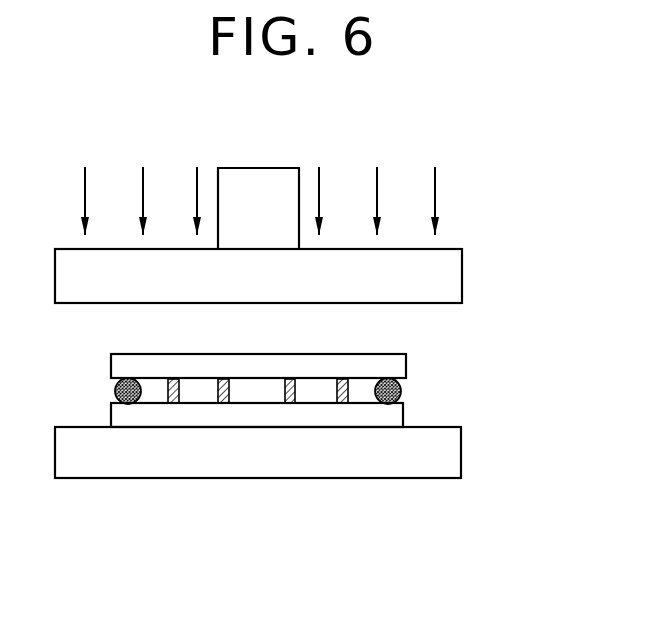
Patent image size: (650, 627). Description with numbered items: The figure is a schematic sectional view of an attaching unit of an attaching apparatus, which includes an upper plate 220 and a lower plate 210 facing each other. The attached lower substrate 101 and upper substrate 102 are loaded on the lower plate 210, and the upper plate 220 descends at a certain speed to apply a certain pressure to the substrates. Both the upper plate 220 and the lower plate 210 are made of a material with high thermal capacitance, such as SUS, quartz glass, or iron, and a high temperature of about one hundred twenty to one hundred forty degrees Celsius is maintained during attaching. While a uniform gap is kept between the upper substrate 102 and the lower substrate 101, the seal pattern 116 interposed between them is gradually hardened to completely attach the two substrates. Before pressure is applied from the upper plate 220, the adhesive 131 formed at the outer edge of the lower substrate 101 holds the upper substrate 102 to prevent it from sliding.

The upper plate 220 is at (446, 276).
The upper substrate 102 is at (406, 358).
The lower substrate 101 is at (403, 412).
The lower plate 210 is at (446, 458).
The seal pattern 116 is at (176, 403).
The adhesive 131 is at (132, 404).